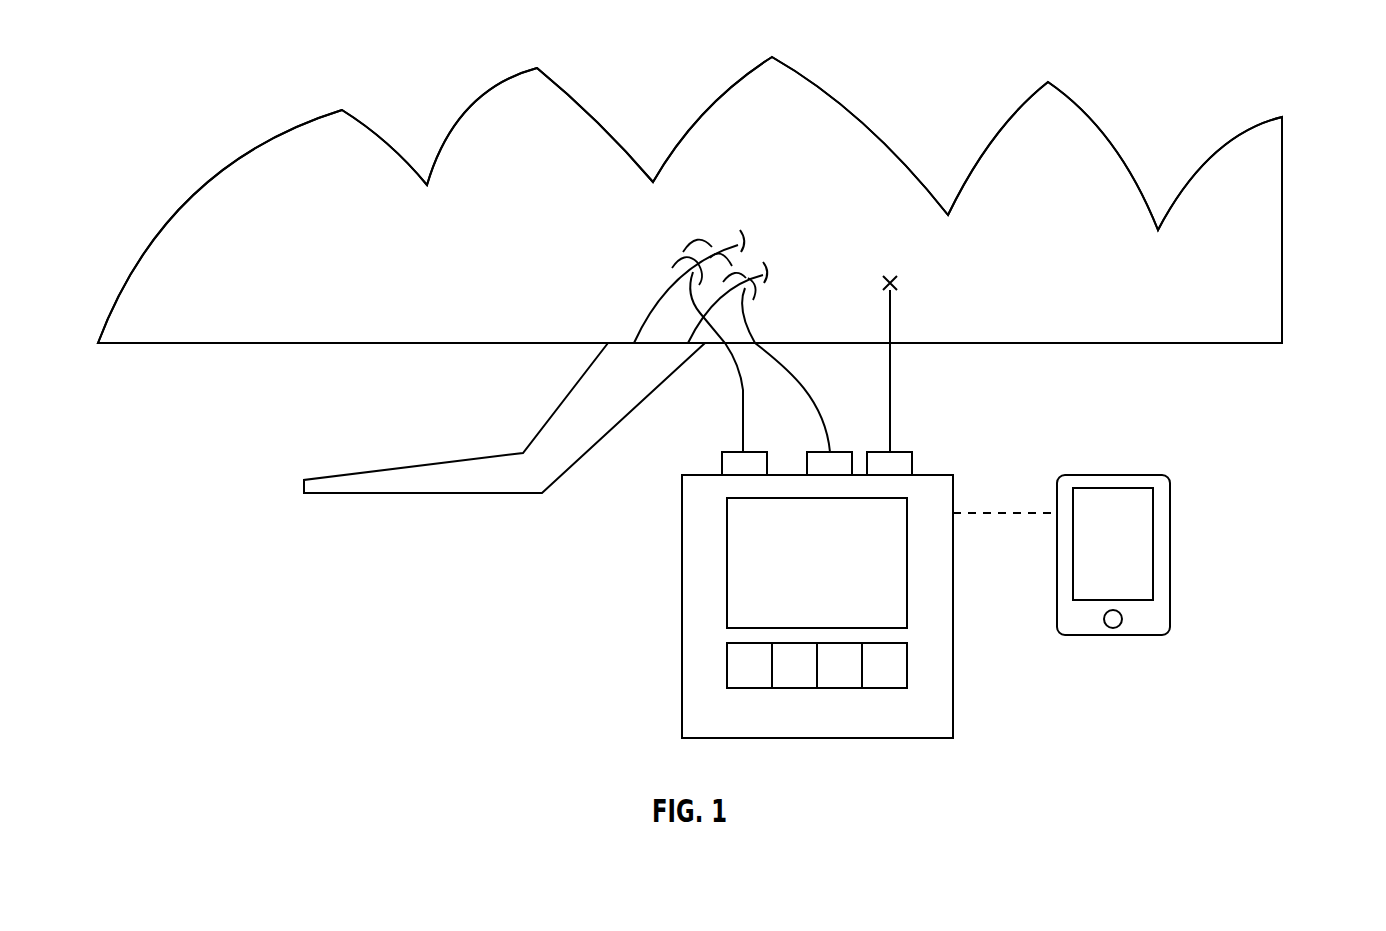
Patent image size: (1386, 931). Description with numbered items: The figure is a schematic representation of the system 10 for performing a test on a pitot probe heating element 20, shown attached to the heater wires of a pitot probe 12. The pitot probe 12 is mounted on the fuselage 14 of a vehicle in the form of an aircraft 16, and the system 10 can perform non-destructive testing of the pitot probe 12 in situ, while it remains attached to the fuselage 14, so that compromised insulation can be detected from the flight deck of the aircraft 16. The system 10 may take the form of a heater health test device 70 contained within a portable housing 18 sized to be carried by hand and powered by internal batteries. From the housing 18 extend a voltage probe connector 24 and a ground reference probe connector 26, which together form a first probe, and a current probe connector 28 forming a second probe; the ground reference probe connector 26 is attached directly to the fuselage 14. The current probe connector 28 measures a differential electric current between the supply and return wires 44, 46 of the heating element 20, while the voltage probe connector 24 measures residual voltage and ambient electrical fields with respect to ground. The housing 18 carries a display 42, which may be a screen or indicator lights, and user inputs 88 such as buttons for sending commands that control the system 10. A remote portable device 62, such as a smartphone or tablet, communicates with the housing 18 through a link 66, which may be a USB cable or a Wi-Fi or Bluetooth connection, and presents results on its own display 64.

The system 10 is at (834, 576).
The pitot probe 12 is at (435, 480).
The fuselage 14 is at (1263, 320).
The aircraft 16 is at (1263, 320).
The portable housing 18 is at (933, 722).
The heater health test device 70 is at (933, 722).
The pitot probe heating element 20 is at (690, 261).
The voltage probe connector 24 is at (745, 403).
The ground reference probe connector 26 is at (890, 322).
The current probe connector 28 is at (745, 318).
The display 42 is at (745, 573).
The supply wire 44 is at (720, 243).
The return wire 46 is at (753, 273).
The remote device 62 is at (1143, 555).
The display 64 is at (1140, 523).
The link 66 is at (985, 513).
The user inputs 88 is at (807, 670).